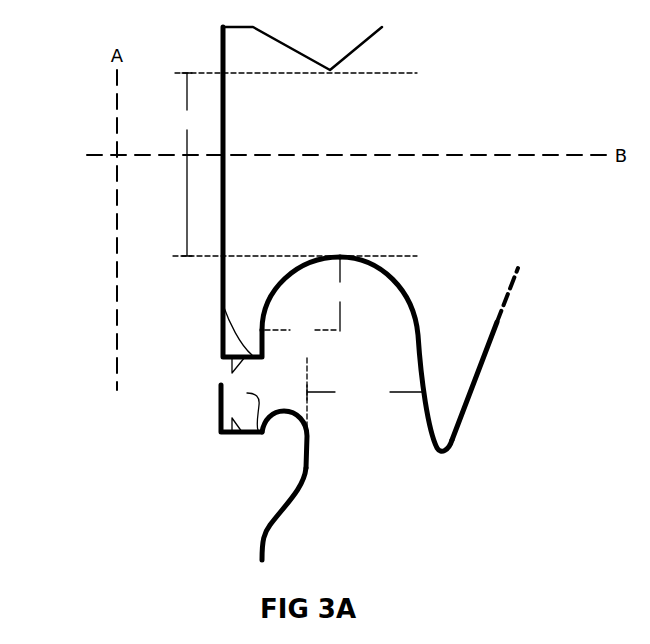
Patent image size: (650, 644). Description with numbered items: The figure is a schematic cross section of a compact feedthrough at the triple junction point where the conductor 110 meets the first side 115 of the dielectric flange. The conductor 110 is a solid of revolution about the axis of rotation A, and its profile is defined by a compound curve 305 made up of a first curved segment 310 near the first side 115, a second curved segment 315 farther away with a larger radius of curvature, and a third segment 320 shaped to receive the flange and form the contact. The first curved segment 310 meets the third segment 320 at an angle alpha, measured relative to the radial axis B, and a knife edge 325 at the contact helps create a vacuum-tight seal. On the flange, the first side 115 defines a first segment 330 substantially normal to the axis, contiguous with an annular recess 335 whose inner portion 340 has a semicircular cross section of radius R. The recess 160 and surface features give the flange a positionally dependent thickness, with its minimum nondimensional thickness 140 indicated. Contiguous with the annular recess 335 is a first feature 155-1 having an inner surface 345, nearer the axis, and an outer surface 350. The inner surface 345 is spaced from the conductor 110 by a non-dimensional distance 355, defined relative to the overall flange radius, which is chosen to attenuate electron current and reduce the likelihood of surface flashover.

The conductor 110 is at (270, 480).
The first side 115 is at (506, 394).
The minimum nondimensional thickness 140 is at (293, 164).
The first feature 155-1 is at (463, 348).
The recess 160 is at (372, 239).
The compound curve 305 is at (310, 448).
The first curved segment 310 is at (285, 415).
The second curved segment 315 is at (297, 493).
The third segment 320 is at (255, 435).
The knife edge 325 is at (226, 360).
The first segment 330 is at (230, 318).
The annular recess 335 is at (305, 257).
The inner portion 340 is at (312, 299).
The inner surface 345 is at (422, 320).
The outer surface 350 is at (486, 387).
The non-dimensional distance 355 is at (364, 395).